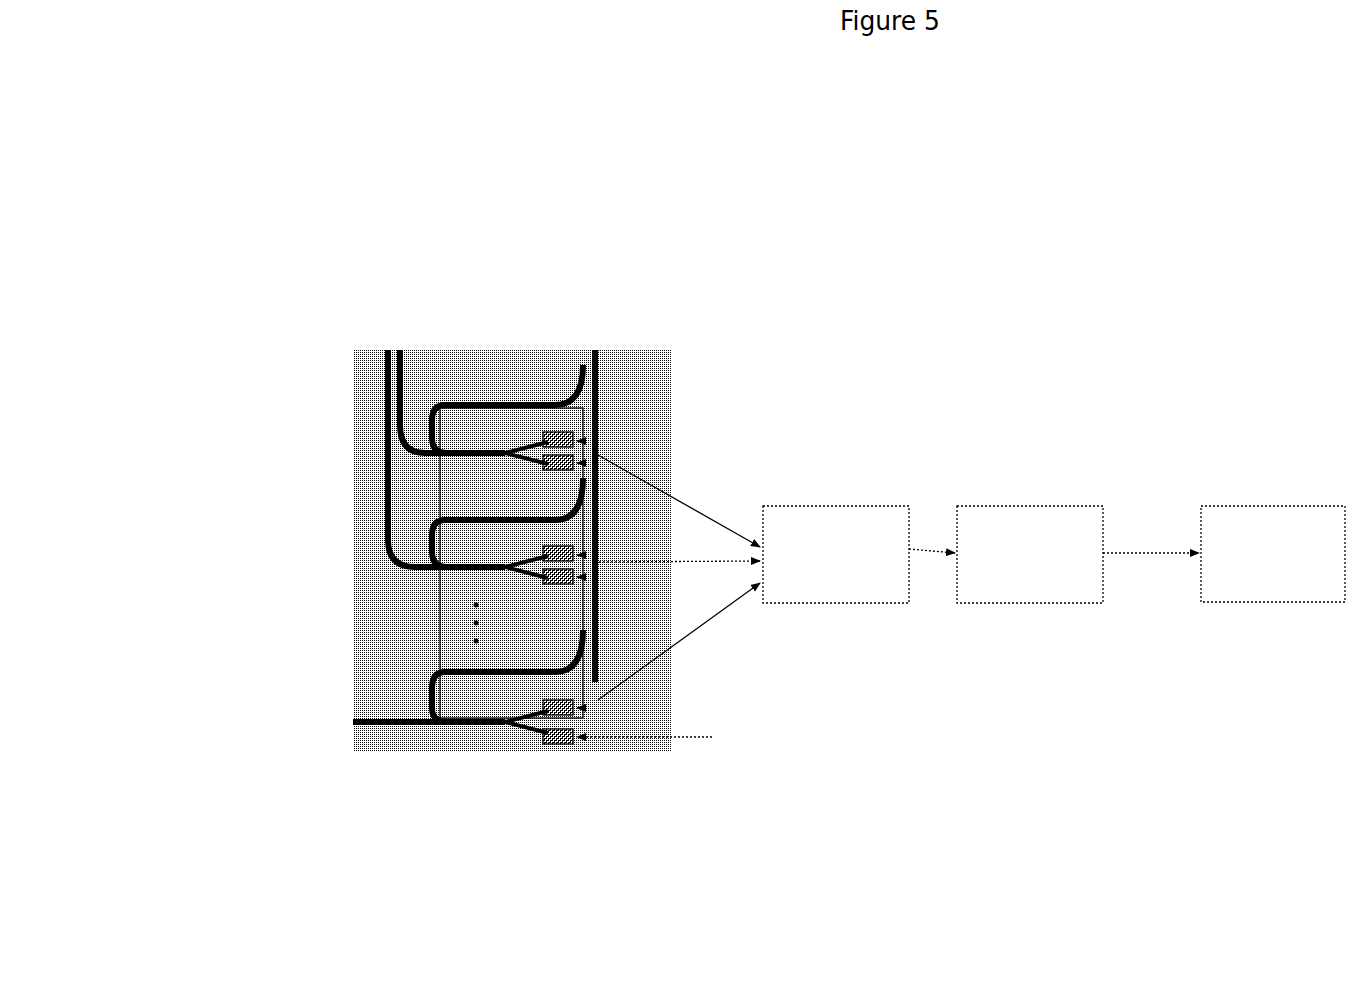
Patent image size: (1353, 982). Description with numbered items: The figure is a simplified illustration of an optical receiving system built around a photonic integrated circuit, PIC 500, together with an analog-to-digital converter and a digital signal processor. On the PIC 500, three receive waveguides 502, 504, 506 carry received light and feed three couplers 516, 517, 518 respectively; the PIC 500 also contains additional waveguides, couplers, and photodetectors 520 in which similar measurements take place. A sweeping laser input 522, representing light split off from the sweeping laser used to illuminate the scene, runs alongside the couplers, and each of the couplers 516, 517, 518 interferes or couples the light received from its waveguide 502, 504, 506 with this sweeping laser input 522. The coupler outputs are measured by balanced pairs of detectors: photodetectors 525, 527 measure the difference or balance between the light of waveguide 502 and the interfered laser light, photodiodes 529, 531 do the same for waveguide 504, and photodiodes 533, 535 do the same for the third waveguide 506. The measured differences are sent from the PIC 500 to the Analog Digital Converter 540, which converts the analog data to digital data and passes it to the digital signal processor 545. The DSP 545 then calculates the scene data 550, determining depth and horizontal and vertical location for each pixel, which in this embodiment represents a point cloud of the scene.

The PIC 500 is at (512, 572).
The waveguide 502 is at (393, 347).
The waveguide 504 is at (378, 385).
The waveguide 506 is at (385, 712).
The coupler 516 is at (485, 455).
The coupler 517 is at (468, 542).
The coupler 518 is at (460, 730).
The additional waveguide, couplers, and photodetectors 520 is at (440, 622).
The sweeping laser input 522 is at (583, 343).
The photodetector 525 is at (585, 464).
The photodetector 527 is at (585, 441).
The photodiode 529 is at (593, 572).
The photodiode 531 is at (593, 555).
The photodiode 533 is at (743, 747).
The photodiode 535 is at (585, 707).
The Analog Digital Converter 540 is at (859, 554).
The digital signal processor 545 is at (1078, 554).
The scene data 550 is at (1273, 554).